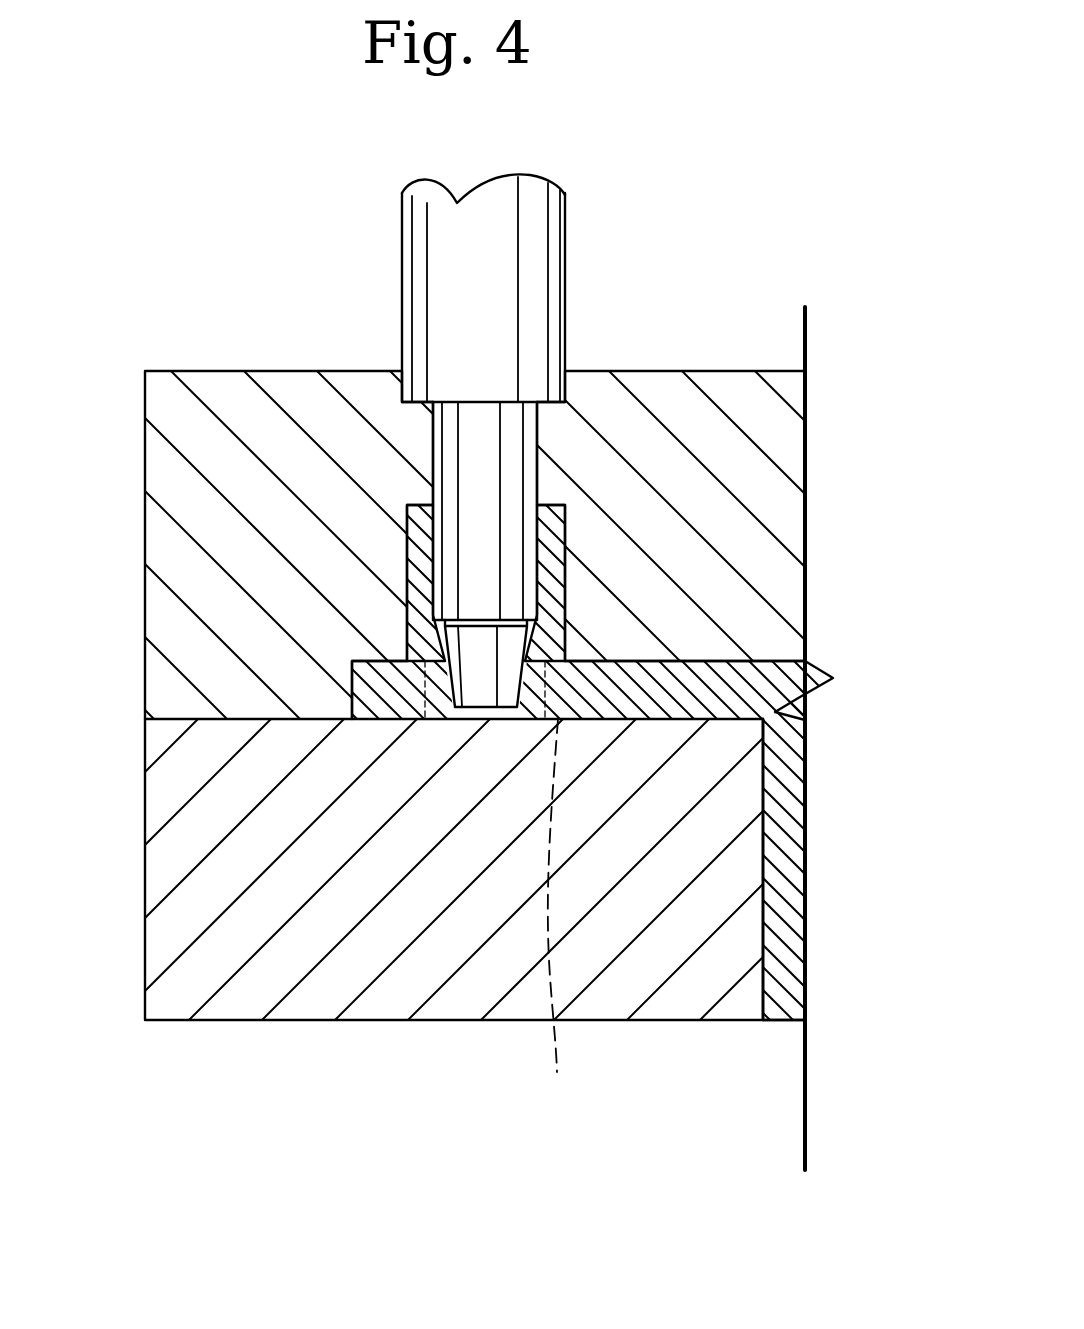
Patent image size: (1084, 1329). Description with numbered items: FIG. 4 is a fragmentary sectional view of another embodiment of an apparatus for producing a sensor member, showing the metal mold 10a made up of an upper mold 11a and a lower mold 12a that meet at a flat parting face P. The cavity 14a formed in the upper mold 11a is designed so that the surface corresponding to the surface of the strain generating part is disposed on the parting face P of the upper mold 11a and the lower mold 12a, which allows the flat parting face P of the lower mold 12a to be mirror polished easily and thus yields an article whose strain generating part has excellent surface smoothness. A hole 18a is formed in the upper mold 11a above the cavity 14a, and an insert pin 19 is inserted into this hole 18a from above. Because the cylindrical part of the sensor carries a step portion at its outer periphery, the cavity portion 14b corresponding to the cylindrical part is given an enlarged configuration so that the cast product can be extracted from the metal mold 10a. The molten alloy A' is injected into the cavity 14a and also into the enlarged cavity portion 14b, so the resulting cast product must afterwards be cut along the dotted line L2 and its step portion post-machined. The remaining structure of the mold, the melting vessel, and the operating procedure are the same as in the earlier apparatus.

The metal mold 10a is at (806, 412).
The upper mold 11a is at (790, 531).
The insert pin 19 is at (548, 221).
The hole 18a is at (519, 437).
The cavity 14a is at (565, 582).
The cavity portion 14b is at (352, 690).
The parting face P is at (717, 707).
The molten alloy A' is at (818, 869).
The lower mold 12a is at (742, 940).
The dotted line L2 is at (559, 920).